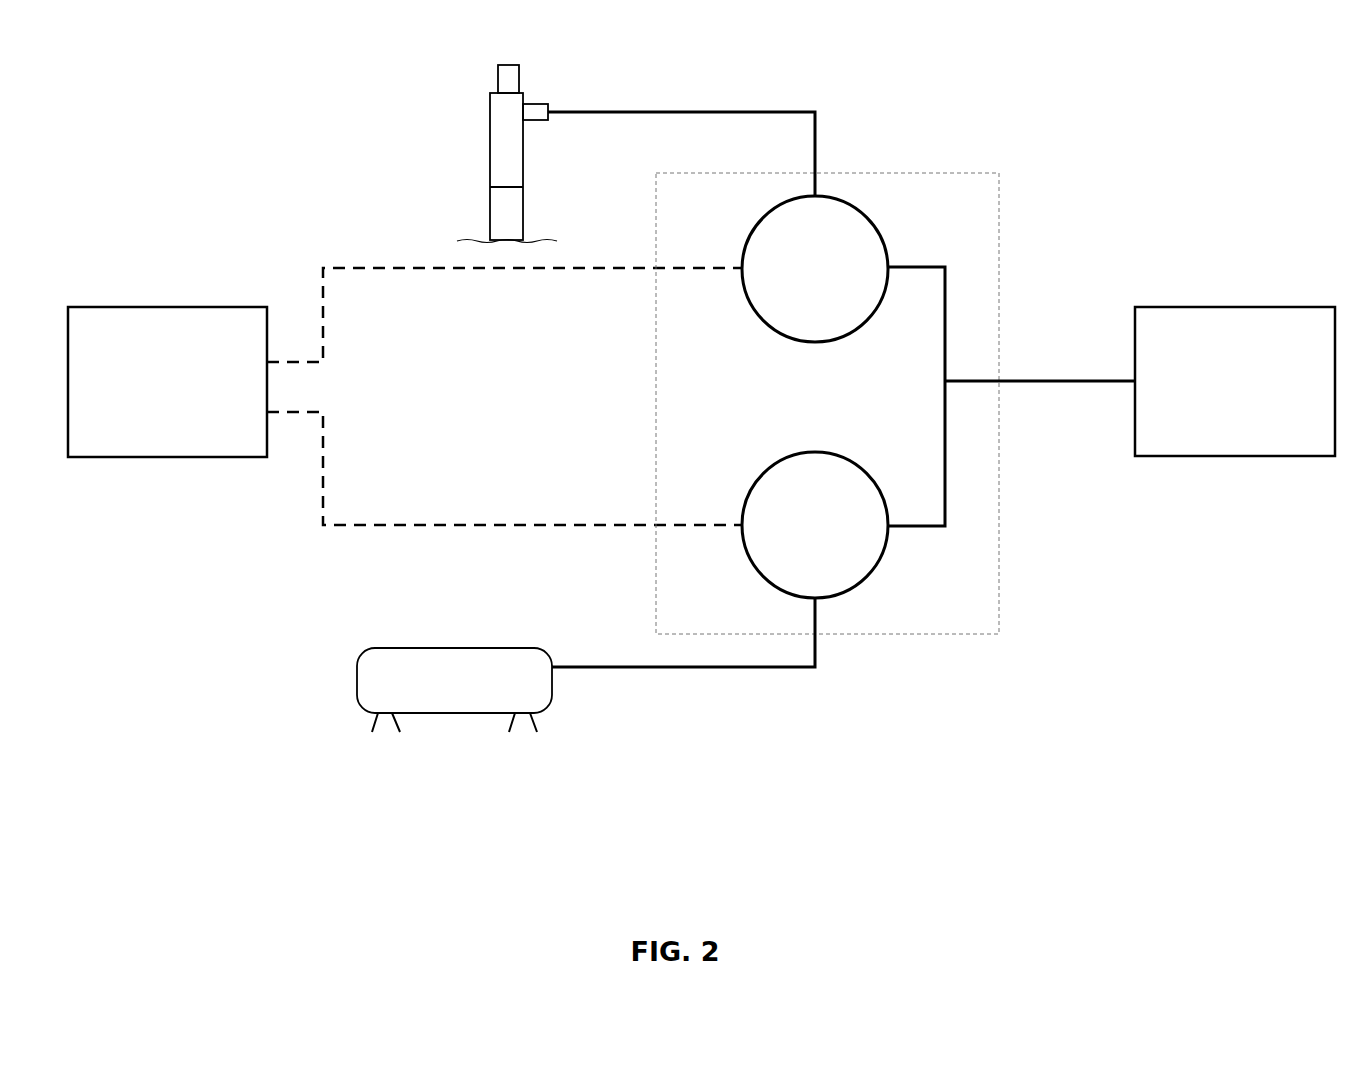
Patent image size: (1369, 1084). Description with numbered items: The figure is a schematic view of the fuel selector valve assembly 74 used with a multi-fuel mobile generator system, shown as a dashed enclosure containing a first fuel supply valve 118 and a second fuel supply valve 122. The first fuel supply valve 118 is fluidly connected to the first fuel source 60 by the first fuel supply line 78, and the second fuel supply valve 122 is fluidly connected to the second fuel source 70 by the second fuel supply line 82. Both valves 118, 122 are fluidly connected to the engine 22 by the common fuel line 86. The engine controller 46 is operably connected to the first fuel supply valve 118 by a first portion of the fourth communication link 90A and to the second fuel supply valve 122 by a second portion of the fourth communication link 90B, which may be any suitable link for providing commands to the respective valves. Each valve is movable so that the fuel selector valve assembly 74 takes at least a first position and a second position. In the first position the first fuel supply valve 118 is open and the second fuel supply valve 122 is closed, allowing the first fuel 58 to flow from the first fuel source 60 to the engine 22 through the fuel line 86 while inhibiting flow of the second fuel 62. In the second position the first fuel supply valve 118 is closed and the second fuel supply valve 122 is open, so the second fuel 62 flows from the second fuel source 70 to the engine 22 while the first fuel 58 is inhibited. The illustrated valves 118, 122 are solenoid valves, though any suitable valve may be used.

The engine 22 is at (1182, 307).
The engine controller 46 is at (167, 382).
The first fuel 58 is at (506, 174).
The first fuel source 60 is at (504, 149).
The second fuel 62 is at (454, 690).
The second fuel source 70 is at (480, 715).
The fuel selector valve assembly 74 is at (999, 563).
The first fuel supply line 78 is at (633, 110).
The second fuel supply line 82 is at (710, 667).
The fuel line 86 is at (1035, 381).
The first portion of the fourth communication link 90A is at (375, 268).
The second portion of the fourth communication link 90B is at (367, 525).
The first fuel supply valve 118 is at (832, 198).
The second fuel supply valve 122 is at (875, 570).